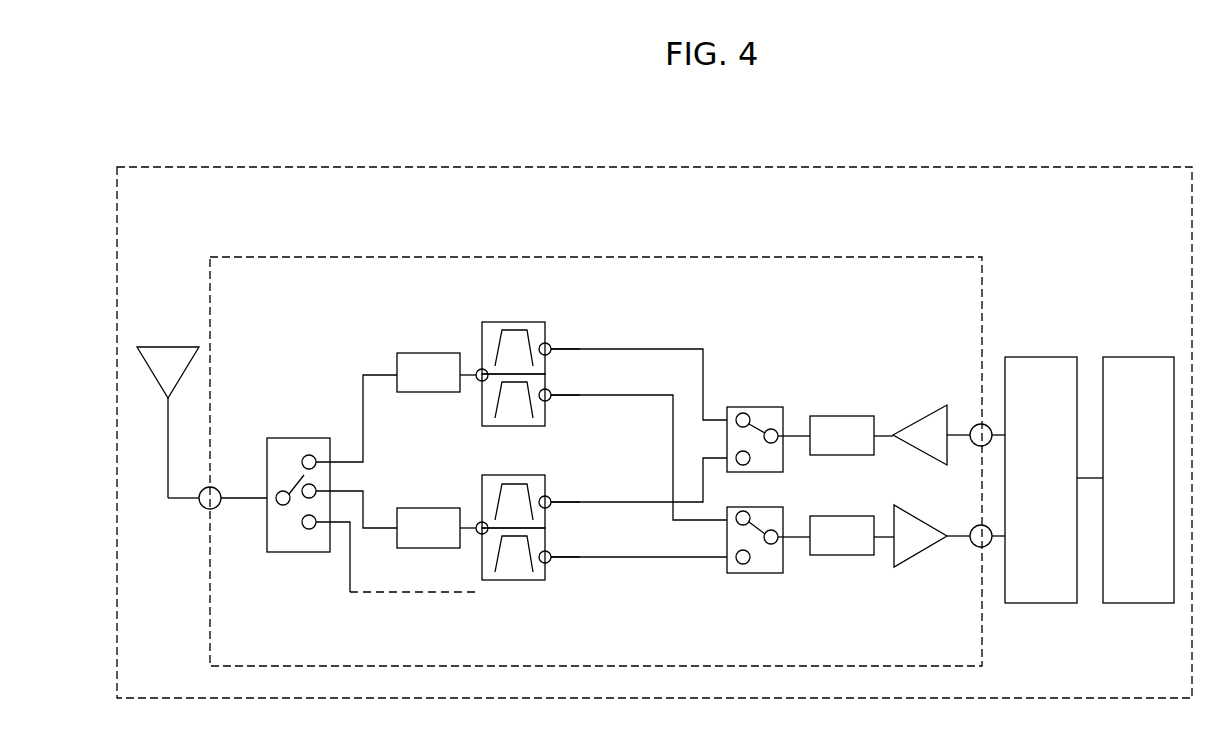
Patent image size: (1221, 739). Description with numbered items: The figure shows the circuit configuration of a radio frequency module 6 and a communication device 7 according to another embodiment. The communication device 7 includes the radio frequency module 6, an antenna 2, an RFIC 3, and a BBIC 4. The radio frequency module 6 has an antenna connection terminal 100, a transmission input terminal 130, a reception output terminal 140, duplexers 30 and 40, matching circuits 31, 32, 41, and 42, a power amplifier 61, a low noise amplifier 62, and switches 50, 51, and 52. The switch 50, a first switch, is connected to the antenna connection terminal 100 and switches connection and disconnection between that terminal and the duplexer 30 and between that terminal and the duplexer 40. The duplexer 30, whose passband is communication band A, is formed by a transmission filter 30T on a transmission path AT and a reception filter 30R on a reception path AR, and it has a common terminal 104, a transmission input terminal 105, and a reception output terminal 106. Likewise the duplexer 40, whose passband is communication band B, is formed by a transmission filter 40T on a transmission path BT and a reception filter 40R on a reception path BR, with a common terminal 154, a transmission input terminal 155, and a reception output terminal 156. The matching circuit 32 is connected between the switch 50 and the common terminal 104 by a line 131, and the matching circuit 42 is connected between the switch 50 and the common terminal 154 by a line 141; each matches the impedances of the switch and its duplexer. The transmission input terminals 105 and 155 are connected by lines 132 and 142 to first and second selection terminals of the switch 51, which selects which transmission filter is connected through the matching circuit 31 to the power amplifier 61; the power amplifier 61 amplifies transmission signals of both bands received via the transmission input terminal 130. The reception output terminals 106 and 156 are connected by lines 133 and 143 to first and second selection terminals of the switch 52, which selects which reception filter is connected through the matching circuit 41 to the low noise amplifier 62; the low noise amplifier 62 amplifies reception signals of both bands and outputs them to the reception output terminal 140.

The antenna 2 is at (163, 347).
The RFIC 3 is at (1048, 357).
The BBIC 4 is at (1131, 357).
The radio frequency module 6 is at (982, 266).
The communication device 7 is at (1147, 166).
The duplexer 30 is at (571, 371).
The transmission filter 30T is at (549, 344).
The reception filter 30R is at (549, 400).
The matching circuit 31 is at (827, 416).
The matching circuit 32 is at (428, 353).
The duplexer 40 is at (575, 531).
The transmission filter 40T is at (549, 497).
The reception filter 40R is at (549, 562).
The matching circuit 41 is at (827, 556).
The matching circuit 42 is at (430, 508).
The switch 50 is at (303, 438).
The switch 51 is at (744, 407).
The switch 52 is at (744, 508).
The power amplifier 61 is at (928, 404).
The low noise amplifier 62 is at (907, 566).
The antenna connection terminal 100 is at (202, 508).
The common terminal 104 is at (479, 381).
The transmission input terminal 105 is at (550, 345).
The reception output terminal 106 is at (550, 392).
The transmission input terminal 130 is at (975, 425).
The line 131 is at (469, 371).
The line 132 is at (637, 349).
The line 133 is at (662, 397).
The reception output terminal 140 is at (975, 546).
The line 141 is at (471, 533).
The line 142 is at (645, 503).
The line 143 is at (645, 558).
The common terminal 154 is at (478, 522).
The transmission input terminal 155 is at (550, 501).
The reception output terminal 156 is at (550, 556).
The transmission path AT is at (682, 349).
The reception path AR is at (681, 408).
The transmission path BT is at (703, 472).
The reception path BR is at (665, 559).